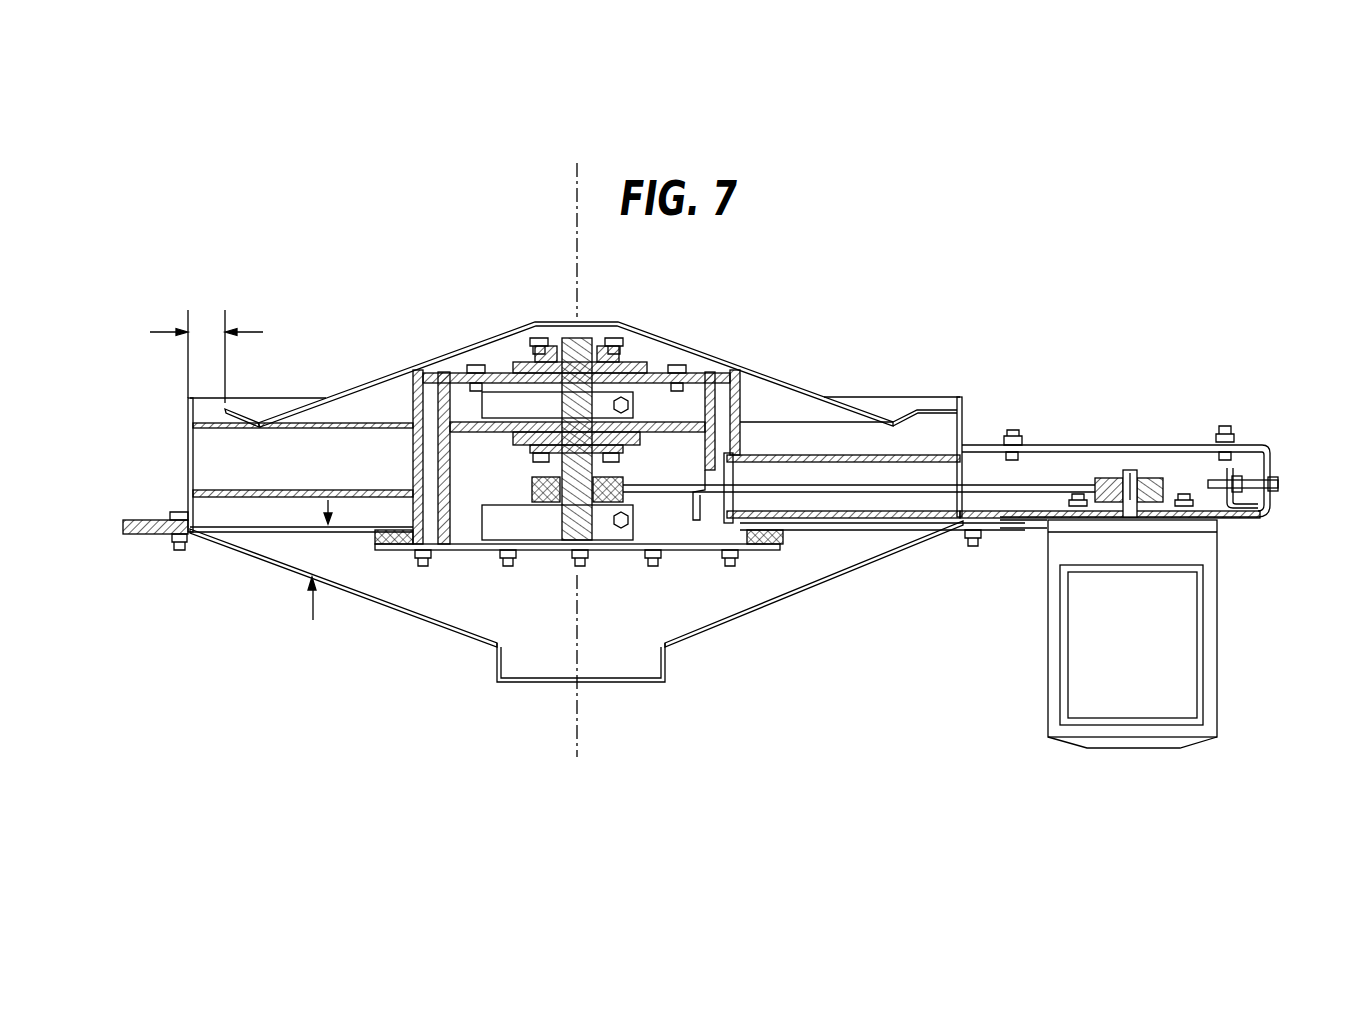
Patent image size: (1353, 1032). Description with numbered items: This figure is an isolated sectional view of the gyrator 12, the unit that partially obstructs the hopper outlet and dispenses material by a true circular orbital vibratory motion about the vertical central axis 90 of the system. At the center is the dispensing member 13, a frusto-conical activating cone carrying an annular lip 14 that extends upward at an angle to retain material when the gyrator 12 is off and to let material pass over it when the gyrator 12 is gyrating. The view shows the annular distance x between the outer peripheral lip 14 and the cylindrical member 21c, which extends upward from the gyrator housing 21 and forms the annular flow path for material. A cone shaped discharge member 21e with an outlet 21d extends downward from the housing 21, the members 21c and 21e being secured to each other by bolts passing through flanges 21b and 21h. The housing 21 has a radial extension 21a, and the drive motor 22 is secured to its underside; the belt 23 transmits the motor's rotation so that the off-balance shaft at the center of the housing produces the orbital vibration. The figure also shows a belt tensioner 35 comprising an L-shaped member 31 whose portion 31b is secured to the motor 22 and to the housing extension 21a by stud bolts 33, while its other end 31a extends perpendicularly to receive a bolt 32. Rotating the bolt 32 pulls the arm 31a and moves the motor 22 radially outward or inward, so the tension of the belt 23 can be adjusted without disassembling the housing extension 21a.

The gyrator 12 is at (771, 336).
The dispensing member 13 is at (441, 368).
The annular lip 14 is at (252, 414).
The gyrator housing 21 is at (187, 460).
The radial extension 21a is at (1037, 522).
The flange 21b is at (152, 518).
The cylindrical member 21c is at (188, 413).
The outlet 21d is at (667, 663).
The cone shaped discharge member 21e is at (349, 592).
The flange 21h is at (140, 537).
The drive motor 22 is at (1207, 643).
The belt 23 is at (913, 483).
The L-shaped member 31 is at (1217, 513).
The arm 31a is at (1231, 470).
The portion 31b is at (1042, 522).
The bolt 32 is at (1280, 484).
The stud bolts 33 is at (1177, 495).
The belt tensioner 35 is at (1230, 400).
The vertical central axis 90 is at (576, 193).